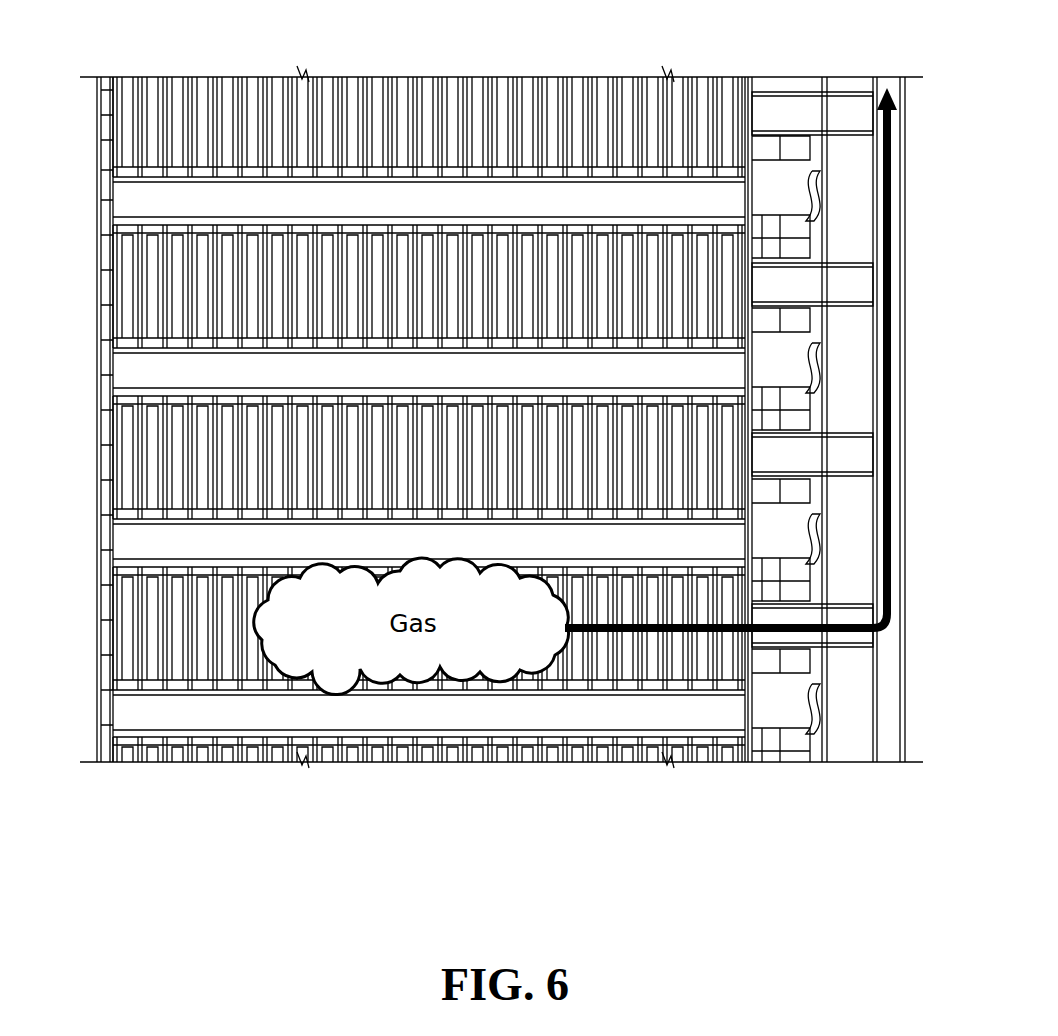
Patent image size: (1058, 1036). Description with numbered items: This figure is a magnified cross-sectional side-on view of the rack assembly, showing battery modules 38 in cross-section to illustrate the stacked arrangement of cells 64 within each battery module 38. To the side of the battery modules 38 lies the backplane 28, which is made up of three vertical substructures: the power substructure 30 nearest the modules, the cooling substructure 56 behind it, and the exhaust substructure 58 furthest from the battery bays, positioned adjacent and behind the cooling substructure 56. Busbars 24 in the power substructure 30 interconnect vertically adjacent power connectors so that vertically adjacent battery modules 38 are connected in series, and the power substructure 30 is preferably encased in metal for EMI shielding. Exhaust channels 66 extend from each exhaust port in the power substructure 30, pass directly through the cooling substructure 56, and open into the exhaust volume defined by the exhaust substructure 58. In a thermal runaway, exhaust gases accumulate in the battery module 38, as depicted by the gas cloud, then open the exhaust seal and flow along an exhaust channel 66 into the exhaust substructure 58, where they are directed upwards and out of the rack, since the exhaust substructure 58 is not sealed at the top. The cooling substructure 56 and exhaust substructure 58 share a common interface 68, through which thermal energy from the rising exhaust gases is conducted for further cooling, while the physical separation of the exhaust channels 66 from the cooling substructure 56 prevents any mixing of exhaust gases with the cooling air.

The busbar 24 is at (815, 538).
The backplane 28 is at (902, 41).
The power substructure 30 is at (772, 712).
The battery module 38 is at (182, 289).
The cooling substructure 56 is at (850, 738).
The exhaust substructure 58 is at (891, 738).
The cell 64 is at (471, 90).
The exhaust channel 66 is at (835, 288).
The interface 68 is at (880, 222).